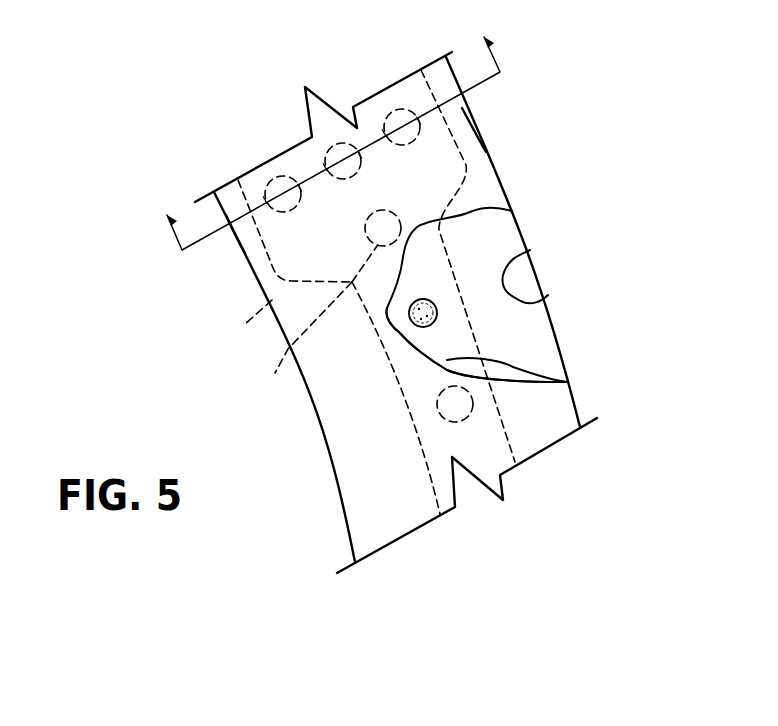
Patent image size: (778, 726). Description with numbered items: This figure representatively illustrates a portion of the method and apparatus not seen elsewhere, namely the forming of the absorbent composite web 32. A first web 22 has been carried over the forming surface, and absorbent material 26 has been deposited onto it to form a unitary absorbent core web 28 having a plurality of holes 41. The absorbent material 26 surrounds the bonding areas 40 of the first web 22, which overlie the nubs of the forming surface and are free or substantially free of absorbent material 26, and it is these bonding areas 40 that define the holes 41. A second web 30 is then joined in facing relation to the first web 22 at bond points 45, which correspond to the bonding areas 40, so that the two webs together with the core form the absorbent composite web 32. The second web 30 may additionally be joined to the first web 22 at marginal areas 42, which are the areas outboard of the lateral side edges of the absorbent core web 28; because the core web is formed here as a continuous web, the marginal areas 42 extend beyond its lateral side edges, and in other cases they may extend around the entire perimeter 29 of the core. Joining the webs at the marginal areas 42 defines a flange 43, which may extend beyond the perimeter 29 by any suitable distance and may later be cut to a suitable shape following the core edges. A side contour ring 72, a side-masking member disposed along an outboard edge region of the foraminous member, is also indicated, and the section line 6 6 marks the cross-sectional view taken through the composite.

The section line 6- 6 is at (326, 128).
The first web 22 is at (437, 316).
The absorbent material 26 is at (567, 382).
The unitary absorbent core web 28 is at (436, 283).
The perimeter 29 is at (455, 283).
The second web 30 is at (372, 413).
The absorbent composite web 32 is at (526, 153).
The bonding areas 40 is at (231, 240).
The holes 41 is at (413, 327).
The marginal areas 42 is at (482, 193).
The flange 43 is at (474, 141).
The bond points 45 is at (304, 346).
The side contour ring 72 is at (530, 278).